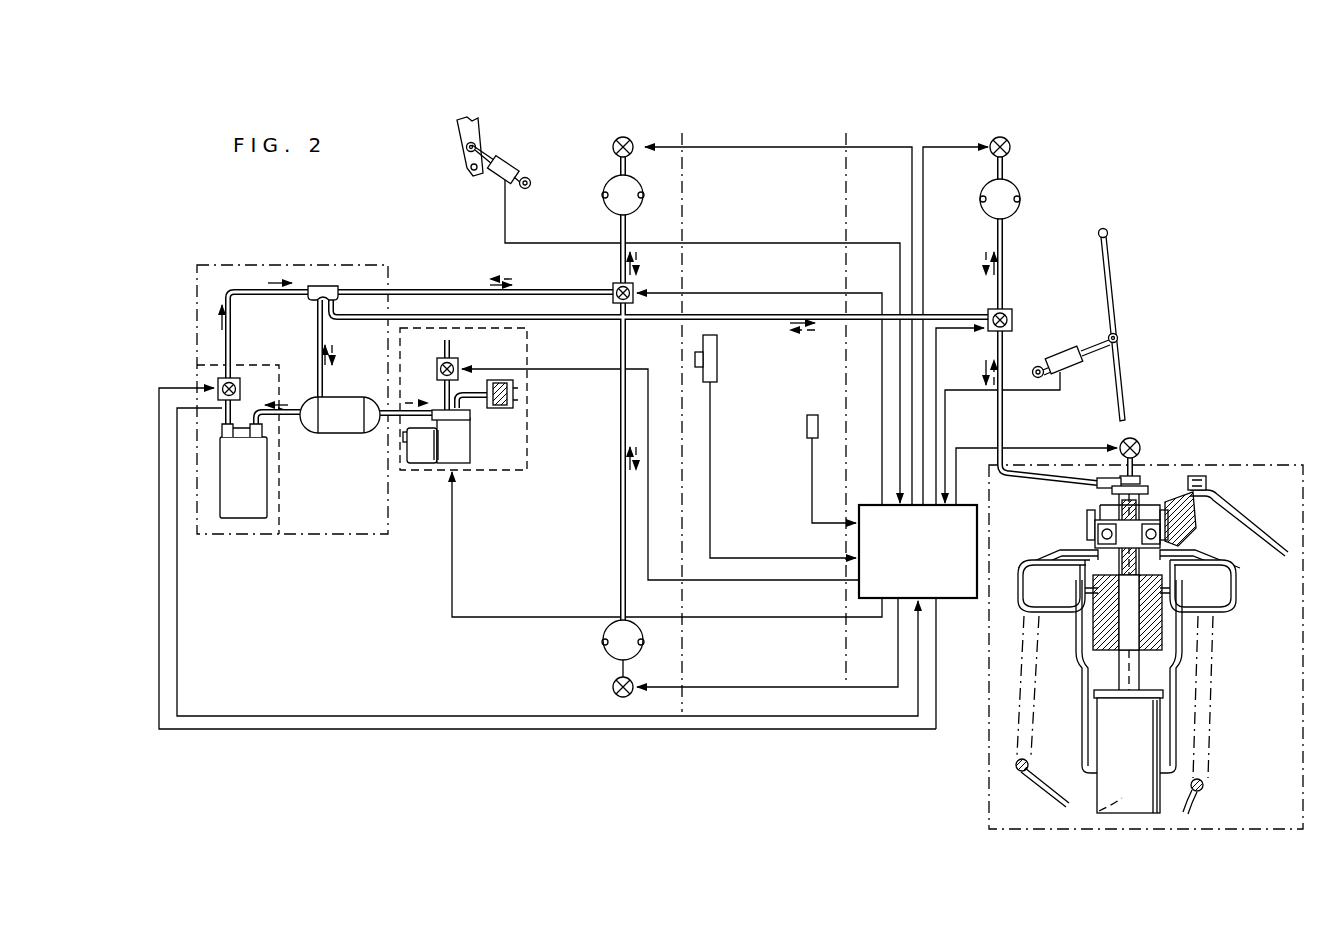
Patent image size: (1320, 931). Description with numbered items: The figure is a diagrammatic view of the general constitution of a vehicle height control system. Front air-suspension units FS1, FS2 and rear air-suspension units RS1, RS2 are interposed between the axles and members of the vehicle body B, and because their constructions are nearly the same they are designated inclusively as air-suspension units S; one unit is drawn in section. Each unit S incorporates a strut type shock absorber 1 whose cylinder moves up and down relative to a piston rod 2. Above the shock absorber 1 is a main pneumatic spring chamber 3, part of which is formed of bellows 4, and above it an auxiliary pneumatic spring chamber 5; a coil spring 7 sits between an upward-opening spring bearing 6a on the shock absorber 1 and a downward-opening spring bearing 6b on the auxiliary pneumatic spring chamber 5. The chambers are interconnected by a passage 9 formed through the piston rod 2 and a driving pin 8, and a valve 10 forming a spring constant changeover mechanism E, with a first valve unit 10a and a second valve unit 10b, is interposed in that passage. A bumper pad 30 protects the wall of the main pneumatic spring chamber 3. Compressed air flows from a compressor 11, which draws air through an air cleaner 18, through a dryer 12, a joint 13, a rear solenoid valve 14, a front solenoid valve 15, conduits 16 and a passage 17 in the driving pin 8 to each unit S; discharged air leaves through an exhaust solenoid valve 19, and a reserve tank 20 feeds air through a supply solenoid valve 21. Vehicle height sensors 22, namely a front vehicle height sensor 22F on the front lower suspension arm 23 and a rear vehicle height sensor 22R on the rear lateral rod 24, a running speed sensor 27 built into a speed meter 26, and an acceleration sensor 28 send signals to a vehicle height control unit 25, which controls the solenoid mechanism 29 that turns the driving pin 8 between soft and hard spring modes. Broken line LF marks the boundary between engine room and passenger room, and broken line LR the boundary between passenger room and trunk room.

The shock absorber 1 is at (1097, 786).
The piston rod 2 is at (1141, 661).
The main pneumatic spring chamber 3 is at (1082, 656).
The bellows 4 is at (1083, 770).
The auxiliary pneumatic spring chamber 5 is at (1040, 565).
The spring bearing 6a is at (1193, 800).
The spring bearing 6b is at (1215, 600).
The coil spring 7 is at (1201, 780).
The driving pin 8 is at (1099, 811).
The passage 9 is at (1185, 556).
The valve 10 is at (1090, 556).
The first valve unit 10a is at (1196, 566).
The second valve unit 10b is at (1205, 585).
The compressor 11 is at (418, 462).
The dryer 12 is at (340, 420).
The joint 13 is at (321, 286).
The rear solenoid valve 14 is at (993, 312).
The front solenoid valve 15 is at (613, 288).
The conduits 16 is at (860, 315).
The passage 17 is at (1097, 488).
The air cleaner 18 is at (497, 409).
The exhaust solenoid valve 19 is at (458, 360).
The reserve tank 20 is at (243, 520).
The supply solenoid valve 21 is at (215, 384).
The vehicle height sensors 22 is at (499, 178).
The front vehicle height sensor 22F is at (517, 166).
The rear vehicle height sensor 22R is at (1066, 352).
The front lower suspension arm 23 is at (478, 129).
The rear lateral rod 24 is at (1117, 300).
The vehicle height control unit 25 is at (865, 505).
The speed meter 26 is at (703, 347).
The running speed sensor 27 is at (695, 369).
The acceleration sensor 28 is at (812, 415).
The solenoid mechanism 29 is at (613, 143).
The bumper pad 30 is at (1093, 646).
The air-suspension unit S is at (604, 181).
The front air-suspension unit FS1 is at (630, 650).
The front air-suspension unit FS2 is at (606, 201).
The rear air-suspension unit RS1 is at (1242, 465).
The rear air-suspension unit RS2 is at (1021, 200).
The broken line LF is at (682, 146).
The broken line LR is at (848, 146).
The vehicle body B is at (1238, 516).
The spring constant changeover mechanism E is at (1086, 575).